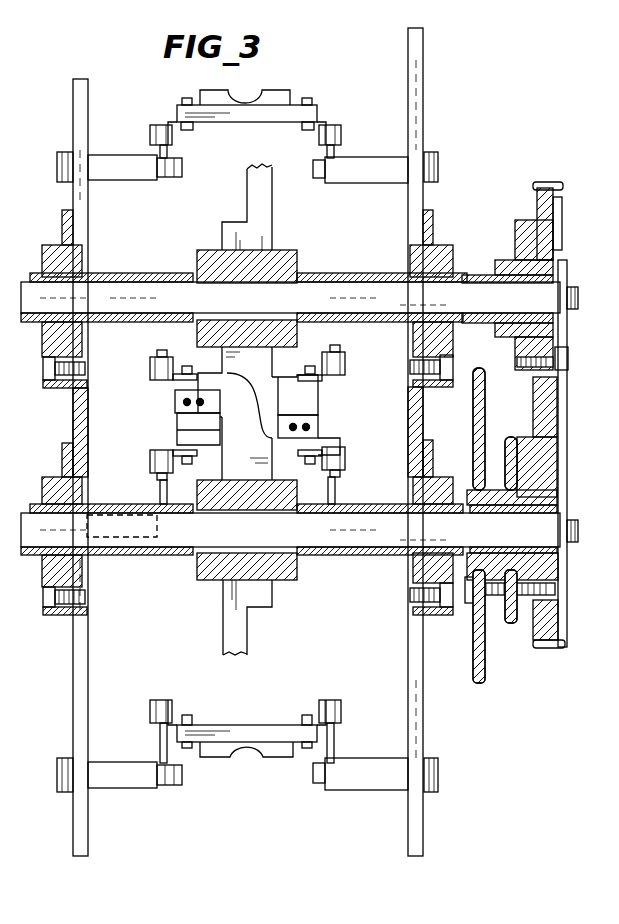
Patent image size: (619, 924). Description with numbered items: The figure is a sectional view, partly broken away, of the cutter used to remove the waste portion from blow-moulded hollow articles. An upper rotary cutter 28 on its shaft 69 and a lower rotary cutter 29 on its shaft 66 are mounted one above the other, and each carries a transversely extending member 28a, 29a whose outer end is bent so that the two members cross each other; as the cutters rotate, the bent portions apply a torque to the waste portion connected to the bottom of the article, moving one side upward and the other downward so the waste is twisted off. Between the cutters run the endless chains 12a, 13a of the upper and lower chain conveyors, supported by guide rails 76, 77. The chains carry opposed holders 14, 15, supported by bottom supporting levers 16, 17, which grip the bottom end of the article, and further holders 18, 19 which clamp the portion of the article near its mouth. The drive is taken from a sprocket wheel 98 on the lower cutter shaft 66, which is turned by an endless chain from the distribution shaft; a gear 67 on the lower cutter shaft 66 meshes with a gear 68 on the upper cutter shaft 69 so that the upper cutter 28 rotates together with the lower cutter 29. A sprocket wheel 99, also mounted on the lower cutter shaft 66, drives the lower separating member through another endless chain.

The holder 18 is at (292, 93).
The holder 19 is at (262, 754).
The upper rotary cutter 28 is at (207, 257).
The transversely extending member 28a is at (262, 227).
The lower rotary cutter 29 is at (283, 582).
The transversely extending member 29a is at (227, 443).
The shaft of the upper cutter 69 is at (350, 283).
The shaft of the lower cutter 66 is at (372, 545).
The gear 68 is at (517, 242).
The gear 67 is at (530, 450).
The sprocket wheel 98 is at (483, 684).
The sprocket wheel 99 is at (514, 624).
The holder 14 is at (307, 400).
The holder 15 is at (335, 465).
The bottom supporting lever 16 is at (178, 398).
The bottom supporting lever 17 is at (318, 427).
The guide rail 76 is at (157, 352).
The guide rail 77 is at (160, 474).
The endless chain 12a is at (344, 373).
The endless chain 13a is at (338, 463).